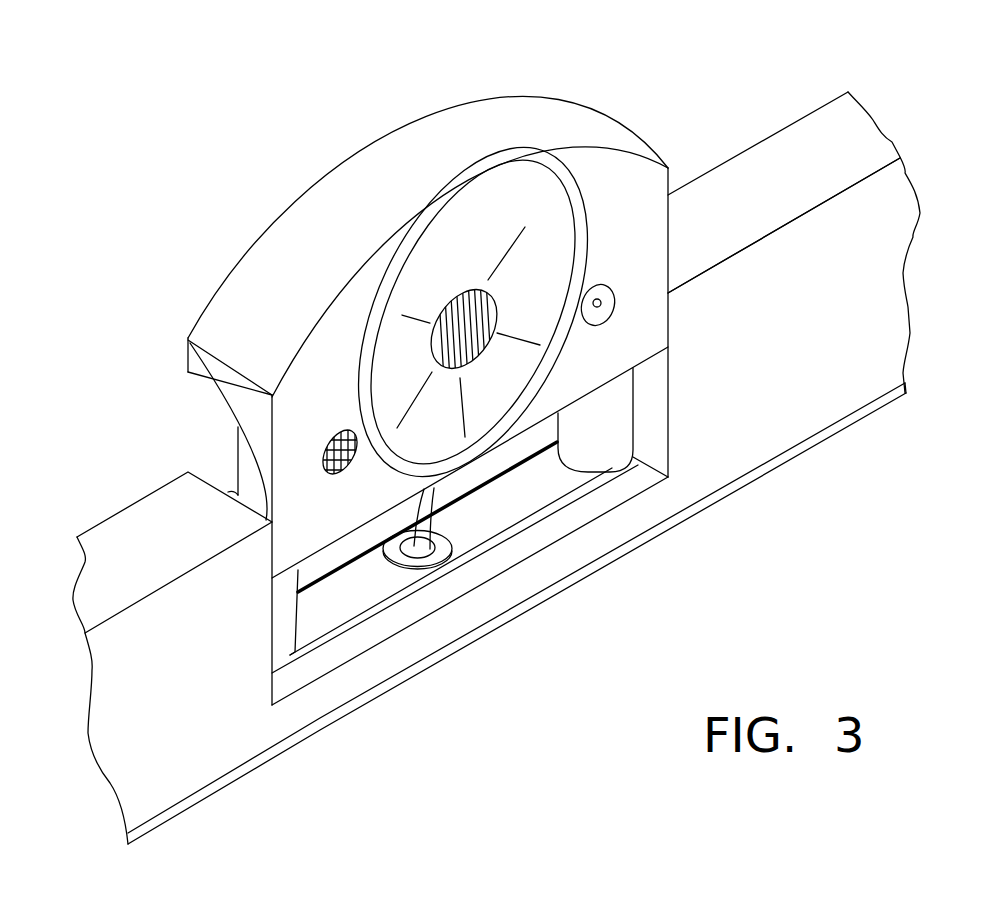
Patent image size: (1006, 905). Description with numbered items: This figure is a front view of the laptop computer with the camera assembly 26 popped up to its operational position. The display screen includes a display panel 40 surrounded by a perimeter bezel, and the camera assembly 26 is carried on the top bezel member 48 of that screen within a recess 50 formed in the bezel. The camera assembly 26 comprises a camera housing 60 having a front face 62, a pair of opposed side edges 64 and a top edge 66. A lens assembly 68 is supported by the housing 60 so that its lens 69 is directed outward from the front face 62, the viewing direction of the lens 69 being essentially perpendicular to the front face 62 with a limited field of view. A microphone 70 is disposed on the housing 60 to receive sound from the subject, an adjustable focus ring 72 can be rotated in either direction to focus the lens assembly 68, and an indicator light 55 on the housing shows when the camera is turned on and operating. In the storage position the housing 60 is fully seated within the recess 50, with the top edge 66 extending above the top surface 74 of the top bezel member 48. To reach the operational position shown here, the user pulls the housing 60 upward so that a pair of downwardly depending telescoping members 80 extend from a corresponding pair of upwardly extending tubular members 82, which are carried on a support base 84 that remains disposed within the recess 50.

The camera assembly 26 is at (328, 98).
The display panel 40 is at (652, 643).
The top bezel member 48 is at (875, 272).
The recess 50 is at (647, 392).
The indicator light 55 is at (607, 302).
The camera housing 60 is at (435, 152).
The front face 62 is at (345, 337).
The side edges 64 is at (247, 403).
The top edge 66 is at (240, 313).
The lens assembly 68 is at (492, 257).
The lens 69 is at (460, 287).
The microphone 70 is at (347, 470).
The adjustable focus ring 72 is at (560, 223).
The top surface 74 is at (147, 543).
The telescoping members 80 is at (248, 463).
The tubular members 82 is at (602, 427).
The support base 84 is at (493, 508).